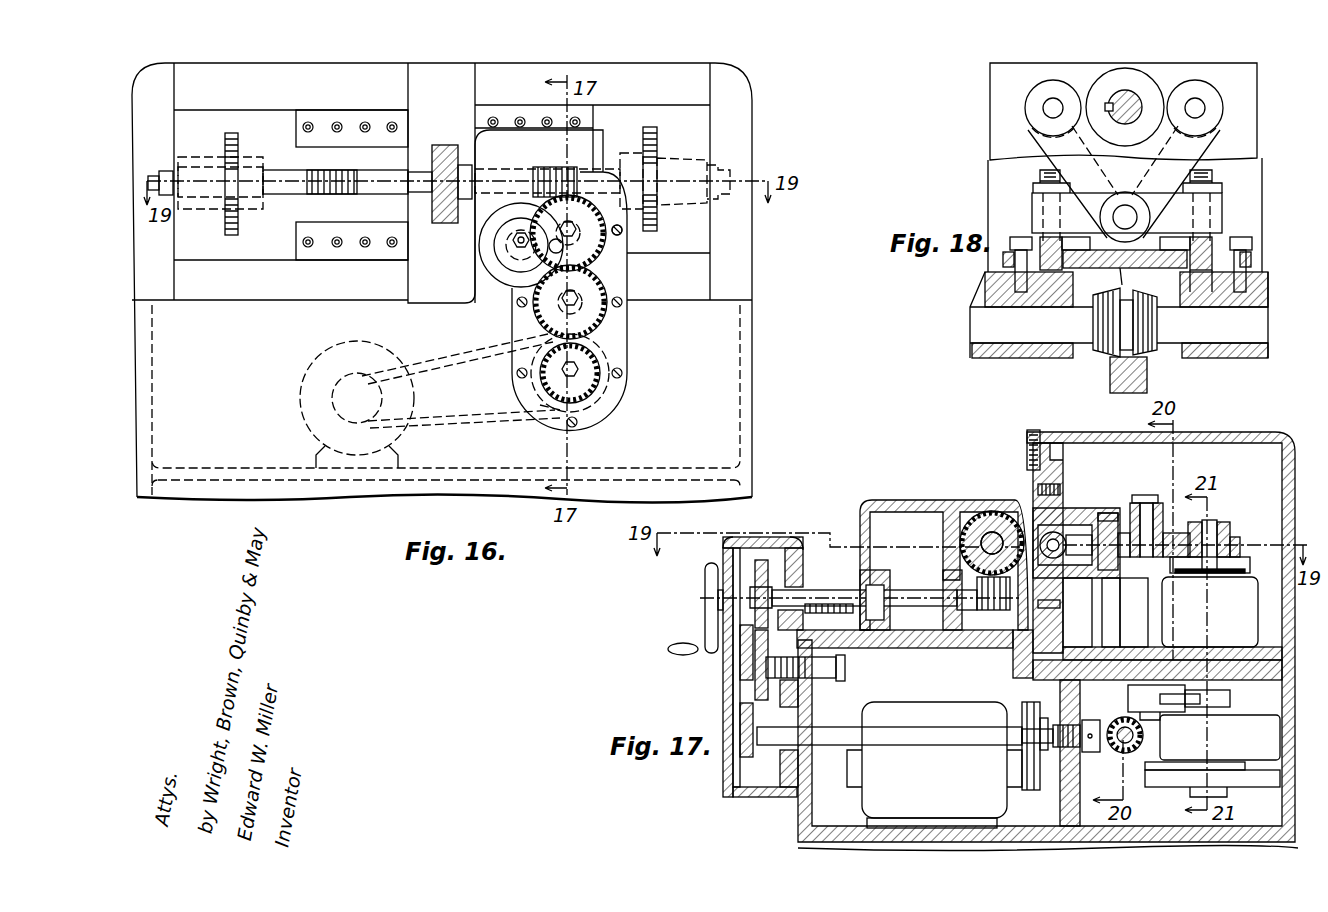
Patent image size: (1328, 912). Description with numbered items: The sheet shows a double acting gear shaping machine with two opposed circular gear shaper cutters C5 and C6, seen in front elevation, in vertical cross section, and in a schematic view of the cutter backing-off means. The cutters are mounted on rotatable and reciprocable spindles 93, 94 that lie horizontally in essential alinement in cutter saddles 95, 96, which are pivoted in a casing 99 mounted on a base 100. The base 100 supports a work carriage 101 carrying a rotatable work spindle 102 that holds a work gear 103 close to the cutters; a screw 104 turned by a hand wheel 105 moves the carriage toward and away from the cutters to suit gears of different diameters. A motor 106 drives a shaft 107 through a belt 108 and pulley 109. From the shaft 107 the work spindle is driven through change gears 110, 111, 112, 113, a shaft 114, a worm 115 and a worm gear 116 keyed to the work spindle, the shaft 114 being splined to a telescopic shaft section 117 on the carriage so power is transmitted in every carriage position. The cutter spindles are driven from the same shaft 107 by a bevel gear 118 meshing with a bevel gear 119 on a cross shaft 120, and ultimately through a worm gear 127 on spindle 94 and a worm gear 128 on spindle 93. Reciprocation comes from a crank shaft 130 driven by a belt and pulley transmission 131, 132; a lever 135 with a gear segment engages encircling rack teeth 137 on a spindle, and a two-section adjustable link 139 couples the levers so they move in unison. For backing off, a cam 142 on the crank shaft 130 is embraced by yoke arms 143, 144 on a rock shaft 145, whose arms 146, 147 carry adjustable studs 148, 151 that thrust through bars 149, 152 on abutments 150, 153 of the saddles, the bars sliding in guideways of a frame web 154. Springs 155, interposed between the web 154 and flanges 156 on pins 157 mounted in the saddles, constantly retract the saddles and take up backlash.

In FIG. 16, the spindle 93 is at (386, 203).
In FIG. 18, the spindle 93 is at (1000, 345).
In FIG. 16, the spindle 94 is at (523, 178).
In FIG. 18, the spindle 94 is at (1250, 332).
In FIG. 17, the spindle 94 is at (1080, 580).
In FIG. 18, the cutter saddle 95 is at (1050, 350).
In FIG. 18, the cutter saddle 96 is at (1190, 348).
In FIG. 17, the cutter saddle 96 is at (1062, 497).
In FIG. 17, the casing 99 is at (1050, 442).
In FIG. 16, the base 100 is at (722, 360).
In FIG. 17, the base 100 is at (798, 835).
In FIG. 17, the work carriage 101 is at (885, 498).
In FIG. 17, the work spindle 102 is at (993, 510).
In FIG. 16, the work gear 103 is at (447, 144).
In FIG. 18, the work gear 103 is at (1110, 392).
In FIG. 17, the screw 104 is at (845, 672).
In FIG. 16, the hand wheel 105 is at (484, 271).
In FIG. 17, the hand wheel 105 is at (706, 604).
In FIG. 16, the motor 106 is at (358, 340).
In FIG. 17, the motor 106 is at (935, 690).
In FIG. 16, the shaft 107 is at (538, 420).
In FIG. 17, the shaft 107 is at (950, 745).
In FIG. 16, the belt 108 is at (440, 350).
In FIG. 17, the belt 108 is at (1035, 793).
In FIG. 16, the pulley 109 is at (612, 357).
In FIG. 17, the pulley 109 is at (1022, 702).
In FIG. 16, the change gear 110 is at (604, 412).
In FIG. 17, the change gear 110 is at (740, 720).
In FIG. 16, the change gear 111 is at (610, 320).
In FIG. 17, the change gear 111 is at (755, 690).
In FIG. 16, the change gear 112 is at (610, 275).
In FIG. 17, the change gear 112 is at (740, 660).
In FIG. 16, the change gear 113 is at (630, 244).
In FIG. 17, the change gear 113 is at (763, 560).
In FIG. 17, the shaft 114 is at (818, 592).
In FIG. 17, the worm 115 is at (990, 647).
In FIG. 17, the worm gear 116 is at (985, 535).
In FIG. 17, the telescopic shaft section 117 is at (903, 590).
In FIG. 17, the bevel gear 118 is at (1128, 715).
In FIG. 17, the bevel gear 119 is at (1140, 745).
In FIG. 17, the cross shaft 120 is at (1105, 755).
In FIG. 16, the worm gear 127 is at (660, 140).
In FIG. 16, the worm gear 128 is at (225, 141).
In FIG. 18, the crank shaft 130 is at (1132, 100).
In FIG. 17, the belt 131 is at (1170, 787).
In FIG. 17, the pulley 132 is at (1268, 787).
In FIG. 17, the lever 135 is at (1220, 540).
In FIG. 17, the rack teeth 137 is at (1062, 525).
In FIG. 17, the link 139 is at (1150, 500).
In FIG. 18, the cam 142 is at (1108, 88).
In FIG. 18, the yoke arm 143 is at (1040, 140).
In FIG. 18, the yoke arm 144 is at (1210, 140).
In FIG. 17, the yoke arm 144 is at (1215, 718).
In FIG. 18, the rock shaft 145 is at (1122, 210).
In FIG. 18, the arm 146 is at (1037, 192).
In FIG. 18, the arm 147 is at (1214, 200).
In FIG. 18, the adjustable stud 148 is at (1056, 240).
In FIG. 18, the bar 149 is at (1068, 248).
In FIG. 18, the abutment 150 is at (1070, 268).
In FIG. 18, the adjustable stud 151 is at (1212, 230).
In FIG. 18, the bar 152 is at (1186, 252).
In FIG. 18, the abutment 153 is at (1185, 282).
In FIG. 18, the web 154 is at (1136, 283).
In FIG. 18, the spring 155 is at (1010, 243).
In FIG. 18, the flange 156 is at (1015, 240).
In FIG. 18, the pin 157 is at (1002, 298).
In FIG. 18, the circular gear shaper cutter C5 is at (1108, 358).
In FIG. 18, the circular gear shaper cutter C6 is at (1145, 358).